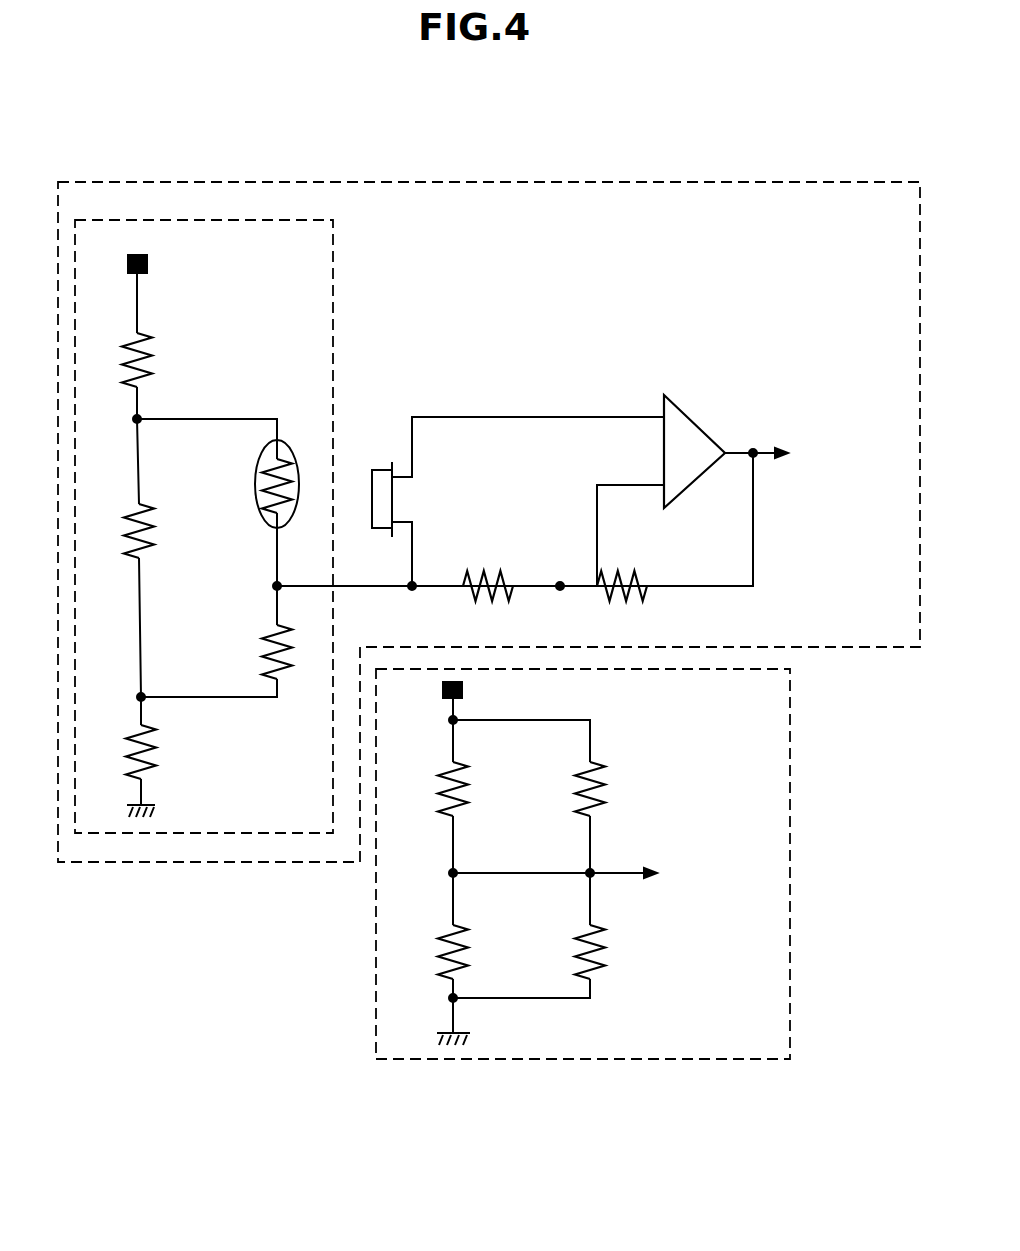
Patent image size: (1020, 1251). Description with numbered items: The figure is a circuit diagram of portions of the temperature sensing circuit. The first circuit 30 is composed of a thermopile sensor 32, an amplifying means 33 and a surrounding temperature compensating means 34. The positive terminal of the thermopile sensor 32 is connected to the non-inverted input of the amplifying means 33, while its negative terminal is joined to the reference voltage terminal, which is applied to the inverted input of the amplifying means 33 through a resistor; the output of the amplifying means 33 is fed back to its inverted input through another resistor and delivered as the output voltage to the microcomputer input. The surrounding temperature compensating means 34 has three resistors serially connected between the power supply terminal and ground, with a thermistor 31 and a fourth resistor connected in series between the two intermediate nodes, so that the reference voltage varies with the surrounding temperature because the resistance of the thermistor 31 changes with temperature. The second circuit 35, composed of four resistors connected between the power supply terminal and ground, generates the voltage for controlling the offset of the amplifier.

The first circuit 30 is at (753, 190).
The thermistor 31 is at (295, 447).
The thermopile sensor 32 is at (380, 477).
The amplifying means 33 is at (695, 437).
The surrounding temperature compensating means 34 is at (318, 288).
The second circuit 35 is at (777, 772).